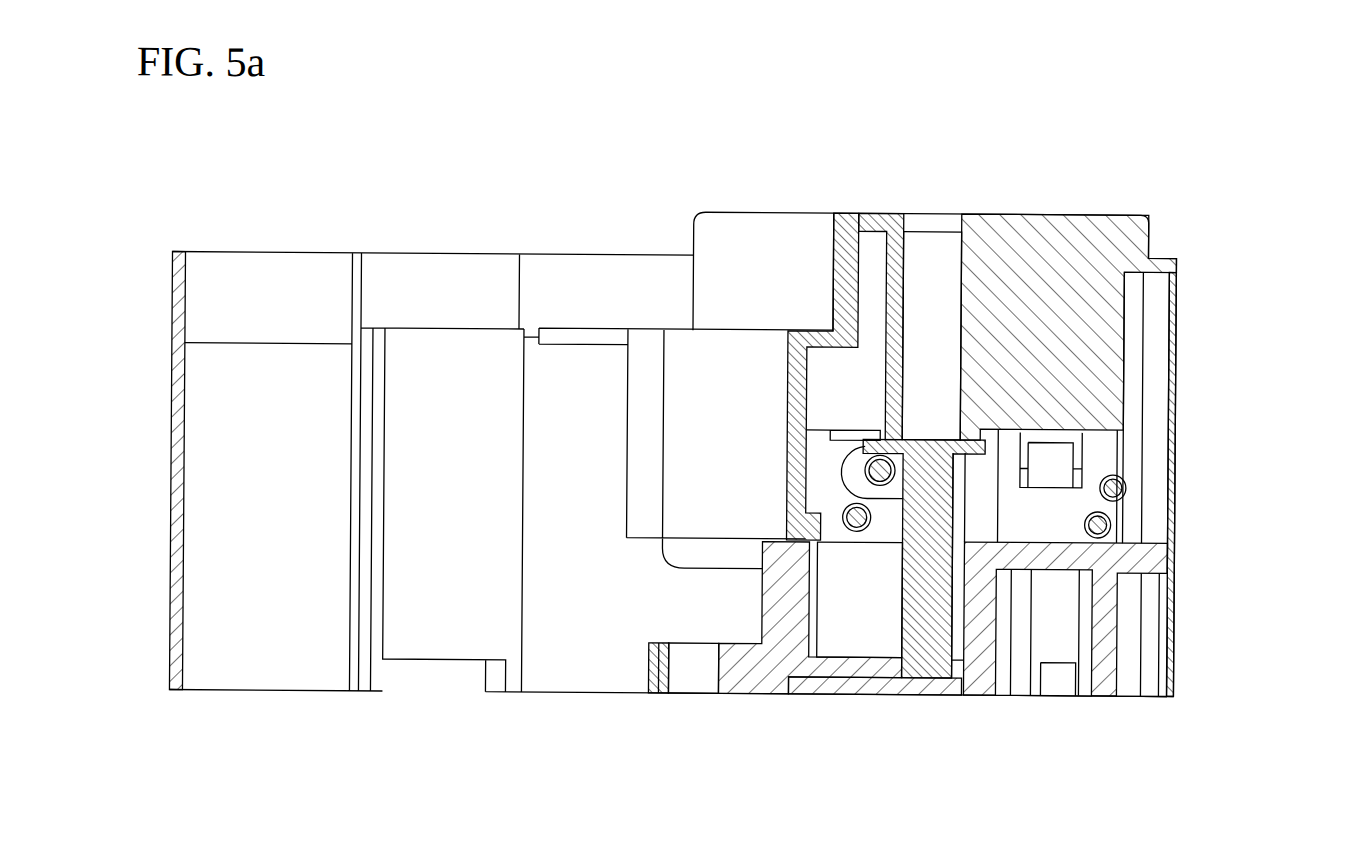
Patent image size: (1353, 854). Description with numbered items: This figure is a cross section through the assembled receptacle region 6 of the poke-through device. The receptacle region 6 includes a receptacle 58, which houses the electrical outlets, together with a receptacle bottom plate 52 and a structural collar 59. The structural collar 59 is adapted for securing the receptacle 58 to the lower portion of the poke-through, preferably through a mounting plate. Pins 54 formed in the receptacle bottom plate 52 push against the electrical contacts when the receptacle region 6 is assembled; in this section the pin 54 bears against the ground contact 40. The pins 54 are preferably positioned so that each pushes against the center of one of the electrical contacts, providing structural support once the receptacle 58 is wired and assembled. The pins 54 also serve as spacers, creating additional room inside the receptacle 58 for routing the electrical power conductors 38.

The receptacle region 6 is at (250, 255).
The electrical power conductors 38 is at (1123, 474).
The ground contact 40 is at (956, 298).
The receptacle bottom plate 52 is at (1125, 604).
The pins 54 is at (900, 498).
The receptacle 58 is at (1106, 210).
The structural collar 59 is at (171, 500).